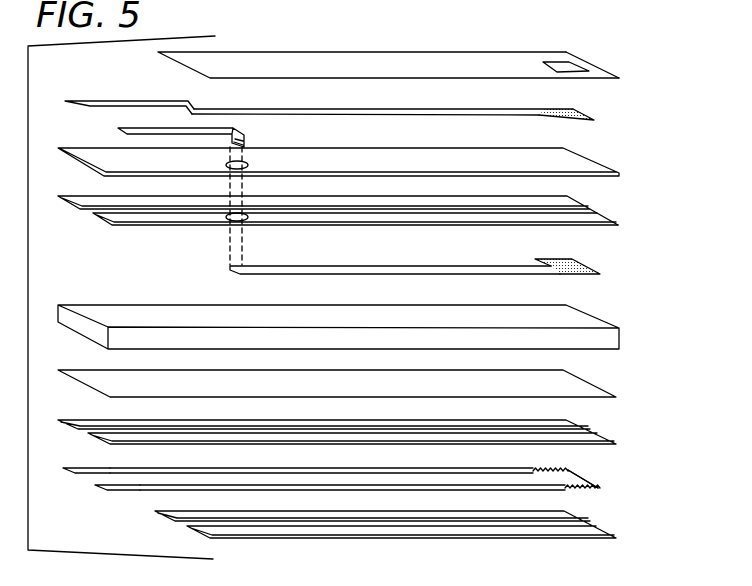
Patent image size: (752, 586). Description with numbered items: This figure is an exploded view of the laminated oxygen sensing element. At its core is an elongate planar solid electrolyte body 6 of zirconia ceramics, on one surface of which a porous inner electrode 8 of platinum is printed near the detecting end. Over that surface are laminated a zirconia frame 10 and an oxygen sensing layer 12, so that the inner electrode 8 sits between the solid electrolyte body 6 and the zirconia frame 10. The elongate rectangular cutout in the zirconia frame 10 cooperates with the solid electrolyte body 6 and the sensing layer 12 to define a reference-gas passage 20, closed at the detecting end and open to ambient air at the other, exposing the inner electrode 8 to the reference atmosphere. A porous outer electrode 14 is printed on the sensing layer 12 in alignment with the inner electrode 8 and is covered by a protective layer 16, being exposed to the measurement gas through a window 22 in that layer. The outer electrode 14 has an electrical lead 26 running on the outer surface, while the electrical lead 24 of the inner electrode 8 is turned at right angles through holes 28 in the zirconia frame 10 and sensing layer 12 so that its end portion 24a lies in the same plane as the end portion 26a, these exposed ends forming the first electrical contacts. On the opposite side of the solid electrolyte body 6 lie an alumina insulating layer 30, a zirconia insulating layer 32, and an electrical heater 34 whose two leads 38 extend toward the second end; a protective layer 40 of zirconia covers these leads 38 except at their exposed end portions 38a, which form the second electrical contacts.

The solid electrolyte body 6 is at (594, 323).
The inner electrode 8 is at (587, 266).
The zirconia frame 10 is at (592, 220).
The oxygen sensing layer 12 is at (589, 163).
The outer electrode 14 is at (583, 116).
The protective layer 16 is at (599, 80).
The reference-gas passage 20 is at (545, 205).
The window 22 is at (573, 66).
The electrical lead 24 is at (348, 266).
The end portion 24a is at (133, 127).
The electrical lead 26 is at (398, 108).
The end portion 26a is at (133, 105).
The holes 28 is at (243, 162).
The alumina insulating layer 30 is at (589, 389).
The zirconia insulating layer 32 is at (593, 438).
The electrical heater 34 is at (585, 472).
The electrical leads 38 is at (307, 468).
The end portions 38a is at (92, 468).
The protective layer 40 is at (586, 534).